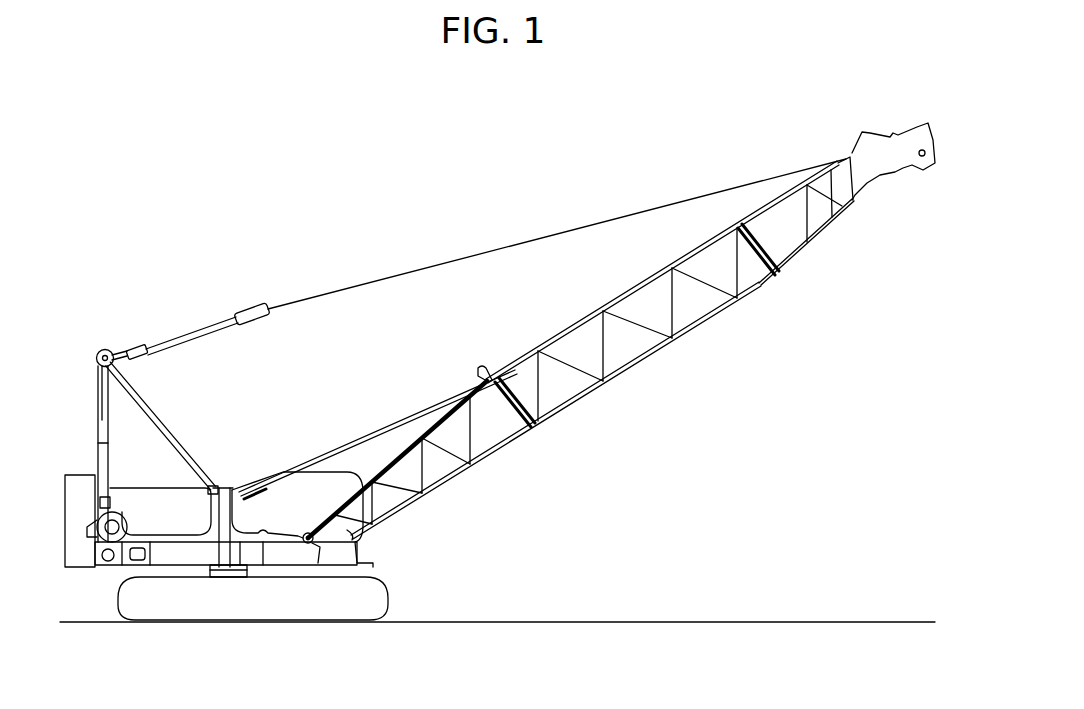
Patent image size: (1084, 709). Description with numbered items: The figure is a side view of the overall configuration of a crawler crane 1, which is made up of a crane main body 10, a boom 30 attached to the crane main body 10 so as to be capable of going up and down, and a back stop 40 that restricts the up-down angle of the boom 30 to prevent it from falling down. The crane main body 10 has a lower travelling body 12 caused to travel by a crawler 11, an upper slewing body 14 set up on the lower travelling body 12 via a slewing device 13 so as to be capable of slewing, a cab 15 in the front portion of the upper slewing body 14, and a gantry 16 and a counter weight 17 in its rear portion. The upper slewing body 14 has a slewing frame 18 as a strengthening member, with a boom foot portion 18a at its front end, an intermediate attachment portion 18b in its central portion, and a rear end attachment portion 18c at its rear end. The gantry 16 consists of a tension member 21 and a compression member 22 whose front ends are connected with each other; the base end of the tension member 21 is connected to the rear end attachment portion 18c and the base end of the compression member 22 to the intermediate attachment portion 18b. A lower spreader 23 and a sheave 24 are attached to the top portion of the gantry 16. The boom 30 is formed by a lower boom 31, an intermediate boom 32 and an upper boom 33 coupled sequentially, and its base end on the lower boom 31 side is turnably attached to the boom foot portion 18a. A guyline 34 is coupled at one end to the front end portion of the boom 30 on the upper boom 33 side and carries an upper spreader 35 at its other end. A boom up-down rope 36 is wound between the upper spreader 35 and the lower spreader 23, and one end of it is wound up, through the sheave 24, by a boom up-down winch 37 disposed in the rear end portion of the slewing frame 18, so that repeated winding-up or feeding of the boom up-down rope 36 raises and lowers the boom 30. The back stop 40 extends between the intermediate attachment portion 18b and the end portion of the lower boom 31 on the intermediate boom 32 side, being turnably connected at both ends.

The crawler crane 1 is at (376, 171).
The crane main body 10 is at (263, 536).
The crawler 11 is at (276, 597).
The lower travelling body 12 is at (250, 622).
The slewing device 13 is at (285, 574).
The upper slewing body 14 is at (210, 568).
The cab 15 is at (364, 532).
The gantry 16 is at (146, 428).
The counter weight 17 is at (79, 568).
The slewing frame 18 is at (242, 536).
The boom foot portion 18a is at (308, 532).
The intermediate attachment portion 18b is at (235, 513).
The rear end attachment portion 18c is at (110, 507).
The tension member 21 is at (101, 405).
The compression member 22 is at (173, 442).
The lower spreader 23 is at (136, 346).
The sheave 24 is at (102, 351).
The boom 30 is at (621, 331).
The lower boom 31 is at (485, 457).
The intermediate boom 32 is at (703, 320).
The upper boom 33 is at (833, 224).
The guyline 34 is at (521, 248).
The upper spreader 35 is at (255, 313).
The boom up-down rope 36 is at (190, 334).
The boom up-down winch 37 is at (120, 525).
The back stop 40 is at (348, 443).